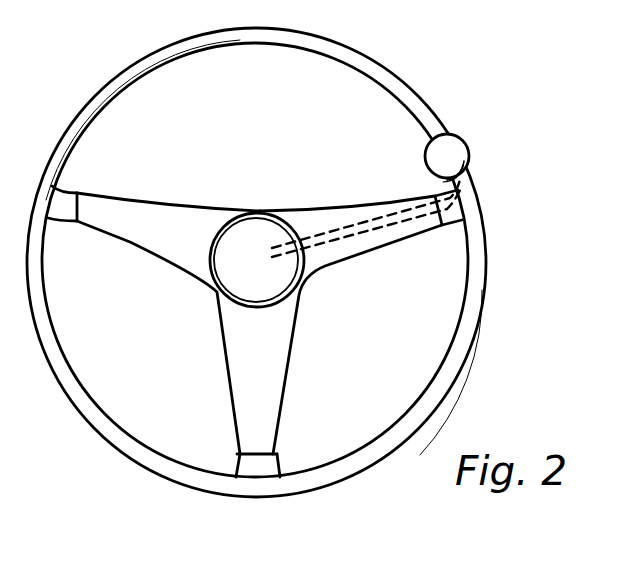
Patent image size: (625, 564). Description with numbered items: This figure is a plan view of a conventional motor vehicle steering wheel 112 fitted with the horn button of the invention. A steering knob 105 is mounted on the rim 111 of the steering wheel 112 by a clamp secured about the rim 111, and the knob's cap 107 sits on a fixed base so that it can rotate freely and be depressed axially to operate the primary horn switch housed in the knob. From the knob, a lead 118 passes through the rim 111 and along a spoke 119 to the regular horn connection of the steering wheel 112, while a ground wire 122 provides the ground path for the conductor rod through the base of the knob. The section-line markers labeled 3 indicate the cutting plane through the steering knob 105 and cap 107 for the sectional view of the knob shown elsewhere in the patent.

The steering knob 105 is at (485, 170).
The cap 107 is at (468, 166).
The rim 111 is at (354, 18).
The steering wheel 112 is at (256, 250).
The lead 118 is at (347, 233).
The spoke 119 is at (350, 188).
The ground wire 122 is at (361, 236).
The section line 3- 3 is at (473, 142).